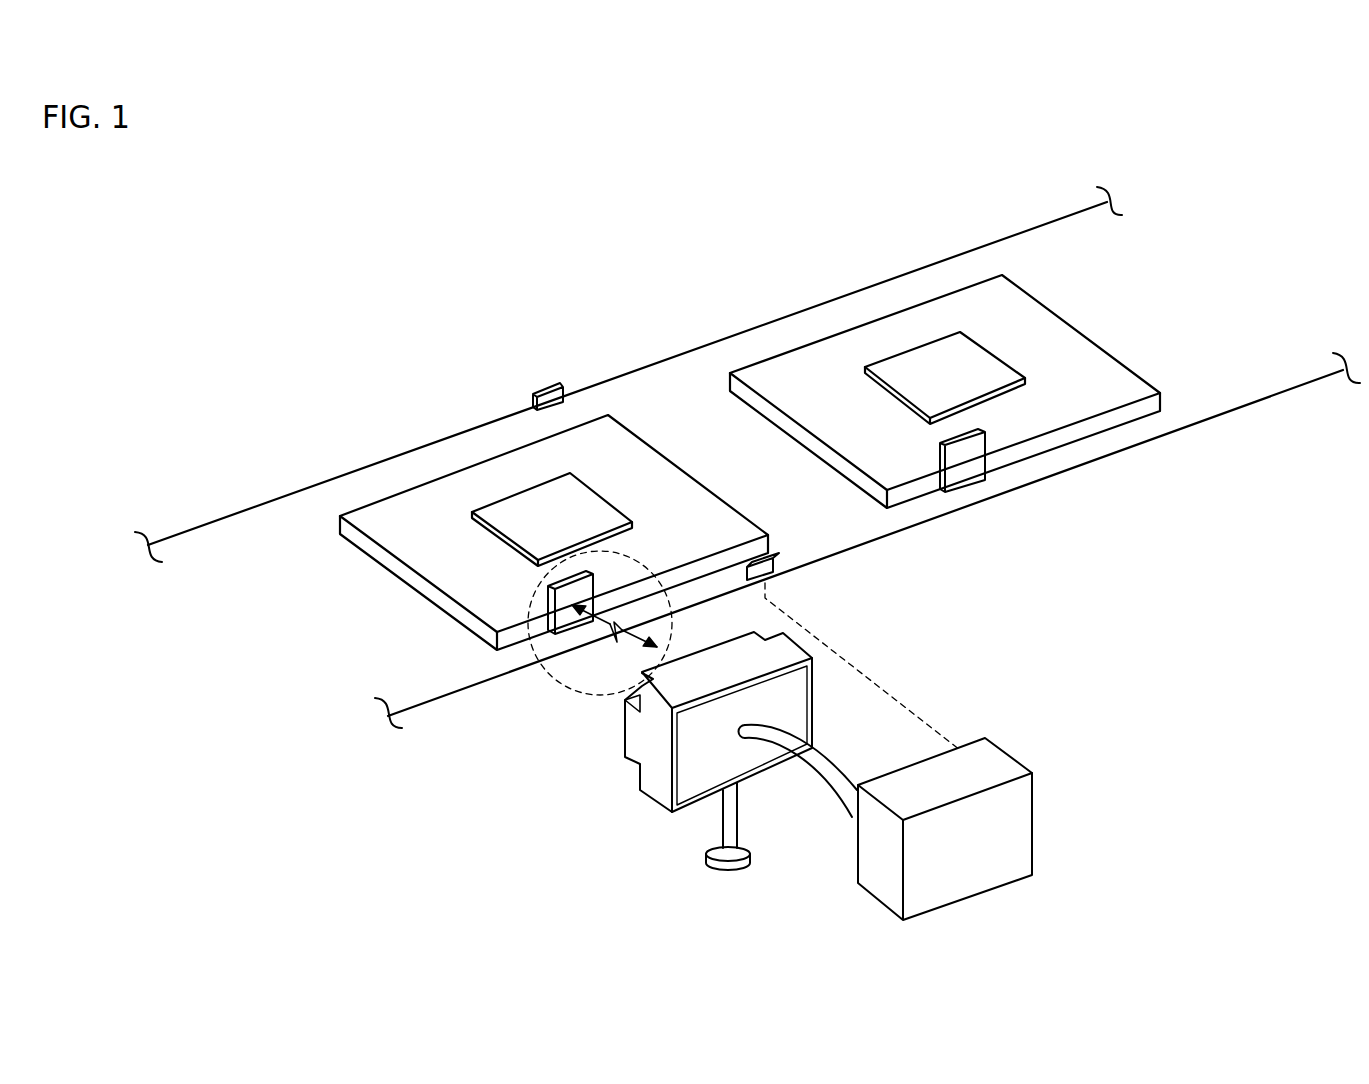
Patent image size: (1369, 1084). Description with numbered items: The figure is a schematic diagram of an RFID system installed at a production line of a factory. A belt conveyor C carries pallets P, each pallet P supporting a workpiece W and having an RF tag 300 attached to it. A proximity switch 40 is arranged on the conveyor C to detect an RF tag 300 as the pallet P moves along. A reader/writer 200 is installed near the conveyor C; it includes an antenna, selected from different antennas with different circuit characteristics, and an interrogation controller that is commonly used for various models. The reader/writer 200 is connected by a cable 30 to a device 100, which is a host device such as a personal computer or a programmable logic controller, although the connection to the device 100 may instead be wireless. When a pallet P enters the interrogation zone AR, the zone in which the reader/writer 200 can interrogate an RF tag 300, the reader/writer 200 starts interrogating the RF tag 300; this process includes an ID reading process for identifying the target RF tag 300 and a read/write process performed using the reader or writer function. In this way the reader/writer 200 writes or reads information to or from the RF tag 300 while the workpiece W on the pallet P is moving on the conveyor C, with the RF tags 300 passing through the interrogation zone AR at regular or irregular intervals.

The conveyor C is at (1063, 237).
The pallet P is at (416, 510).
The workpiece W is at (511, 510).
The proximity switch 40 is at (548, 387).
The RF tag 300 is at (570, 628).
The interrogation zone AR is at (562, 687).
The reader/writer 200 is at (645, 755).
The cable 30 is at (825, 783).
The device 100 is at (993, 762).